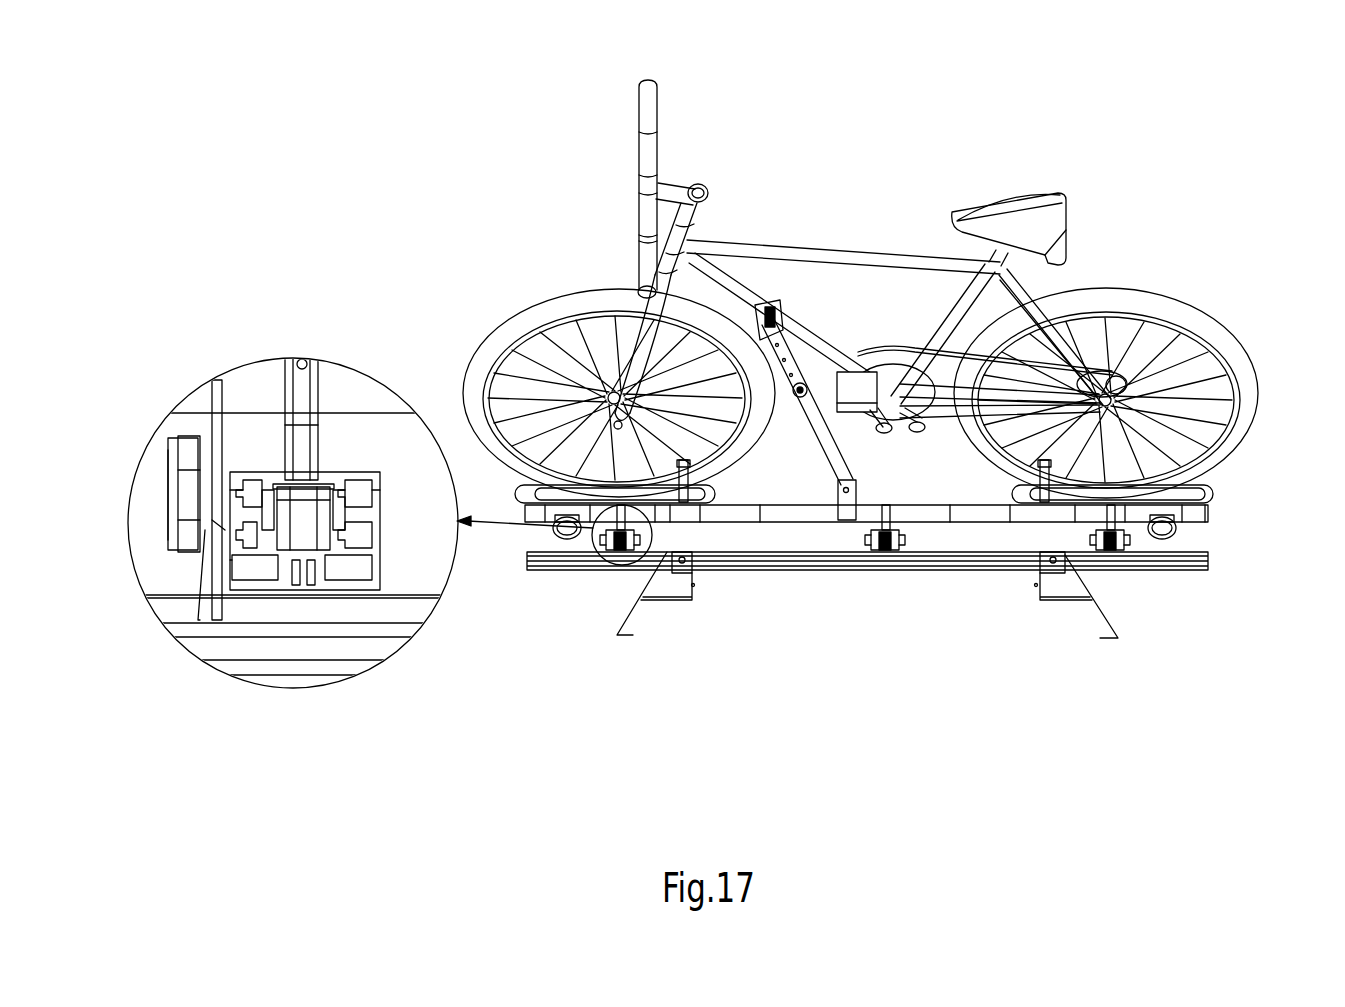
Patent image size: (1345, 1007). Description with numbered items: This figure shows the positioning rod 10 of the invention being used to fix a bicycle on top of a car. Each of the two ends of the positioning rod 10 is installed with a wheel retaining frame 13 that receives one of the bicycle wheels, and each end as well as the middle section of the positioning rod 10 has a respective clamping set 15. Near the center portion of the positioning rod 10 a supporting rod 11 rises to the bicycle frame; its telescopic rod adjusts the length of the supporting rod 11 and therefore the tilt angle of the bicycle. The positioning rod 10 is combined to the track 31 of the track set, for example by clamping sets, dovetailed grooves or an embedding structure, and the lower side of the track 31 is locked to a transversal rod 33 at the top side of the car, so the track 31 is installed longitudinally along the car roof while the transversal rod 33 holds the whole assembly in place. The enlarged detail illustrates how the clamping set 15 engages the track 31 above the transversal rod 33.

The positioning rod 10 is at (755, 513).
The supporting rod 11 is at (825, 455).
The wheel retaining frame 13 is at (1212, 492).
The clamping set 15 is at (307, 535).
The track 31 is at (885, 552).
The transversal rod 33 is at (967, 568).